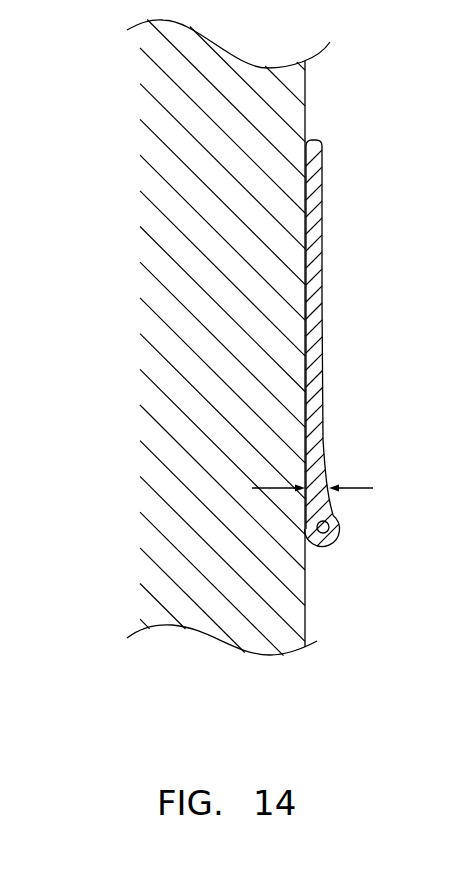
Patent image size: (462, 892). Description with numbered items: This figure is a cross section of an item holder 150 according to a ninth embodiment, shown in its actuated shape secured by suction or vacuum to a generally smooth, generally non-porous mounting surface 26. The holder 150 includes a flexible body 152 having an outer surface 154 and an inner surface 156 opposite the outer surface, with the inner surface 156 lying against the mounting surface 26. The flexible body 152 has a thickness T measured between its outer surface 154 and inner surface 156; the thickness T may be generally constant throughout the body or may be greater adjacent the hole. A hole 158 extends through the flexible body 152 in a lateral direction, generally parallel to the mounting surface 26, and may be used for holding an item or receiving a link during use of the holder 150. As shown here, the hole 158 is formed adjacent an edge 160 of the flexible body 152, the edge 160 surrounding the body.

The mounting surface 26 is at (317, 627).
The item holder 150 is at (308, 356).
The flexible body 152 is at (322, 192).
The outer surface 154 is at (327, 322).
The inner surface 156 is at (295, 191).
The hole 158 is at (329, 524).
The edge 160 is at (318, 547).
The thickness T is at (370, 488).